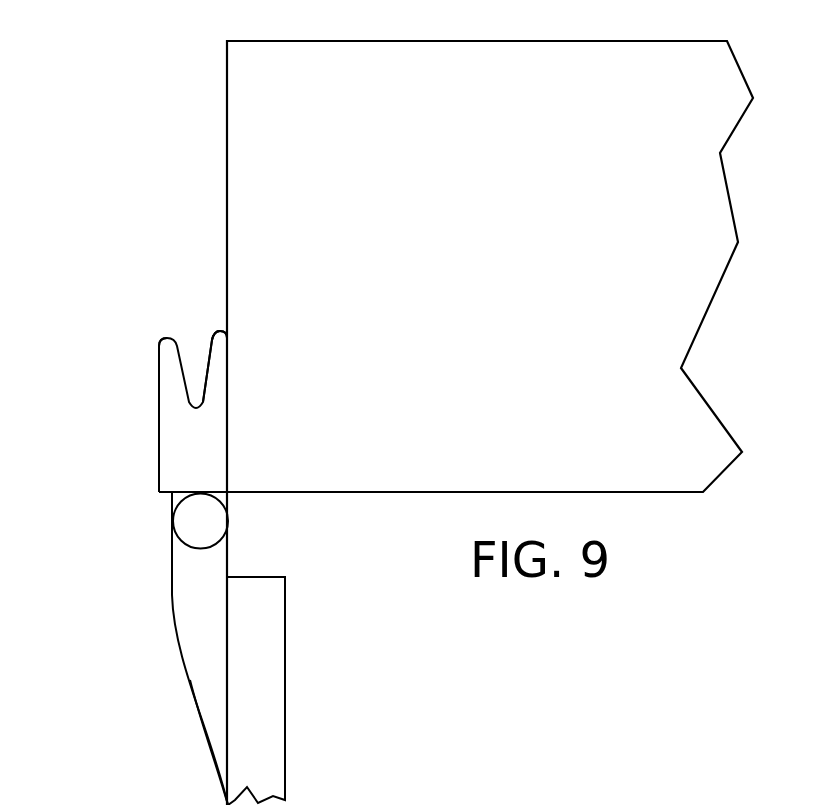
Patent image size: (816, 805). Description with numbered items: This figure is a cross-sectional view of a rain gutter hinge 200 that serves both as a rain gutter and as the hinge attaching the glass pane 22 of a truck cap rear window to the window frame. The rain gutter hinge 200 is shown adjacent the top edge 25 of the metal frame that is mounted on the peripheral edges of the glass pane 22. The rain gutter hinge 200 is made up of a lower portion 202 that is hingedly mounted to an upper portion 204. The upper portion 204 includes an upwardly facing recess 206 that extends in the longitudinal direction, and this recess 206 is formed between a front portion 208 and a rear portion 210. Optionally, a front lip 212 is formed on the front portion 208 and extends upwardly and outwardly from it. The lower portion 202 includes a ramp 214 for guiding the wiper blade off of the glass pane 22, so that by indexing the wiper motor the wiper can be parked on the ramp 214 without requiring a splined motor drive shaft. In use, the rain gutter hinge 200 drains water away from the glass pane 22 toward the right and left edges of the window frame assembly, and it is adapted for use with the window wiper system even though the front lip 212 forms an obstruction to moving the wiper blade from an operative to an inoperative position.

The top edge 25 is at (458, 250).
The glass pane 22 is at (265, 713).
The rain gutter hinge 200 is at (283, 465).
The lower portion 202 is at (172, 598).
The upper portion 204 is at (182, 463).
The upwardly facing recess 206 is at (208, 356).
The front portion 208 is at (165, 383).
The rear portion 210 is at (220, 377).
The front lip 212 is at (530, 804).
The ramp 214 is at (204, 716).